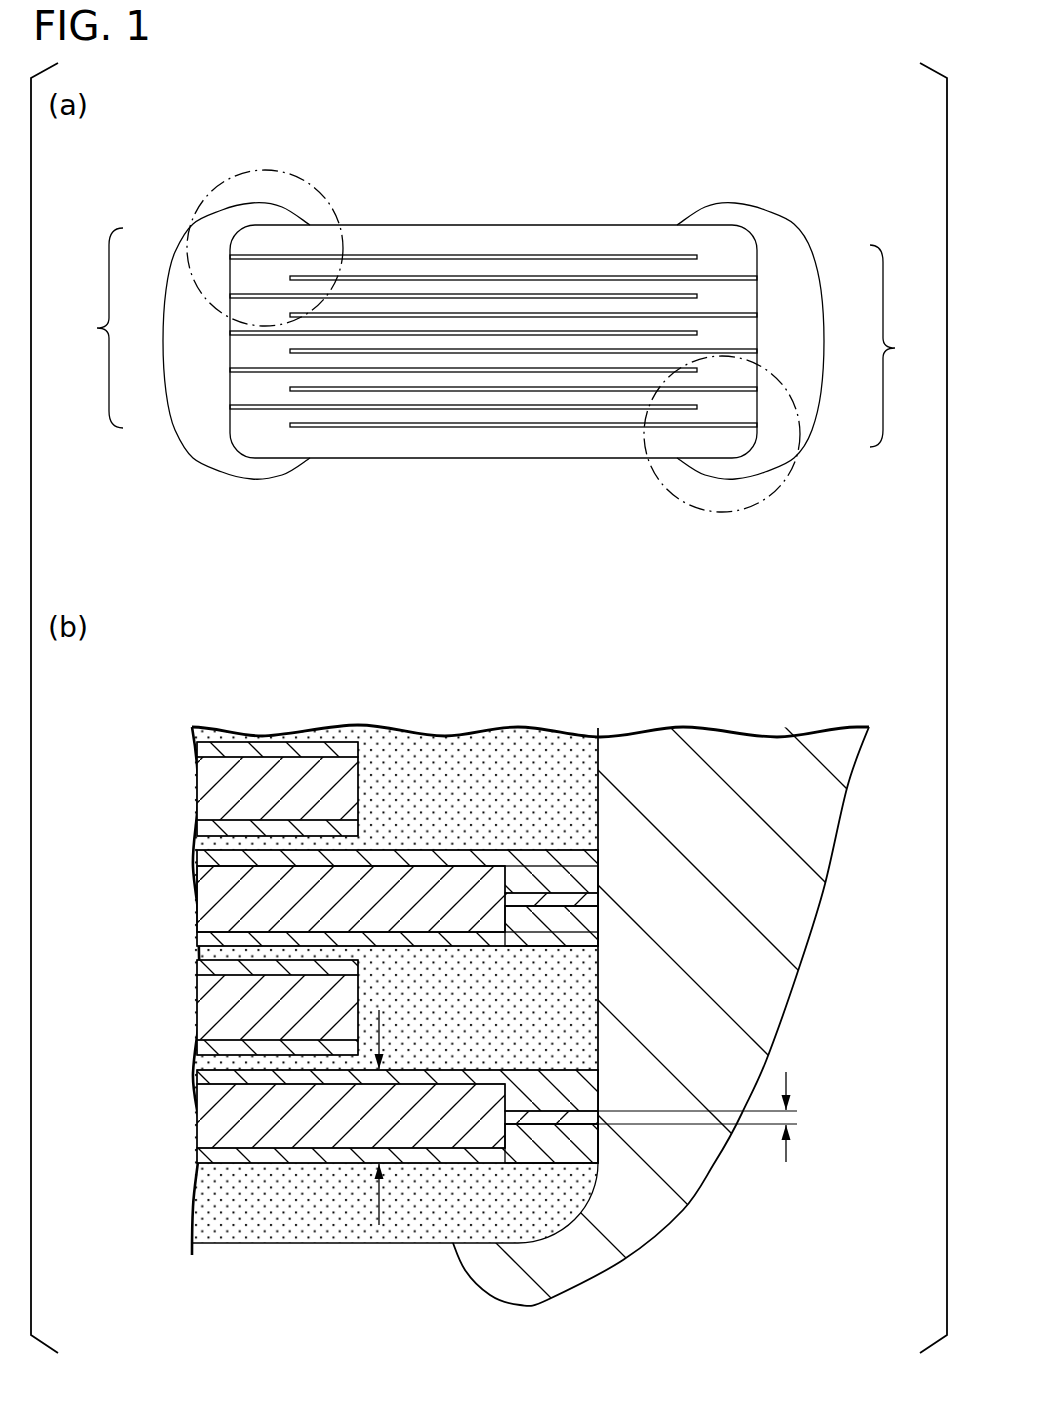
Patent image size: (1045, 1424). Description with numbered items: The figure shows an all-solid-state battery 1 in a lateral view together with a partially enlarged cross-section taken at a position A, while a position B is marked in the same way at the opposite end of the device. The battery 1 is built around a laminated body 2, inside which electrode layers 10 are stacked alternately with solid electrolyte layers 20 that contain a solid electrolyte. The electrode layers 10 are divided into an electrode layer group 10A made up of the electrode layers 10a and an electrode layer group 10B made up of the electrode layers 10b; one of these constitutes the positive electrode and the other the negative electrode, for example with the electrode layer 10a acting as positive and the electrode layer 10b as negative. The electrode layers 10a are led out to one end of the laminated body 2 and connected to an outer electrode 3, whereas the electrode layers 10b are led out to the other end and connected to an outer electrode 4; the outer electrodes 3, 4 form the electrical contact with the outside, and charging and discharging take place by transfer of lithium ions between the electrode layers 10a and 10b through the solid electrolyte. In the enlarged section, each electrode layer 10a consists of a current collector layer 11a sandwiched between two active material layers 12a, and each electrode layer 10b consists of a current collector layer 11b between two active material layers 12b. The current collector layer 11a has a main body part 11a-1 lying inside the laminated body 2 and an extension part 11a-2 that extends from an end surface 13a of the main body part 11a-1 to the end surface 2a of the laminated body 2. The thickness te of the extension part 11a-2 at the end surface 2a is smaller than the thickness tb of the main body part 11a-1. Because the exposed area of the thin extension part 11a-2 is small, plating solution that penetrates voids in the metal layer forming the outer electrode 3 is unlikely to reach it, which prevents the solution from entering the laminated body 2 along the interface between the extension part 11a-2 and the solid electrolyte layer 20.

The all-solid-state battery 1 is at (652, 172).
The laminated body 2 is at (552, 222).
The end surface of the laminated body 2a is at (599, 972).
The outer electrode 3 is at (770, 232).
The outer electrode 4 is at (215, 232).
The electrode layer 10 is at (500, 252).
The electrode layer 10a is at (738, 276).
The electrode layer 10b is at (248, 255).
The electrode layer group 10A is at (906, 346).
The electrode layer group 10B is at (85, 328).
The current collector layer 11a is at (565, 680).
The main body part 11a-1 is at (425, 888).
The extension part 11a-2 is at (540, 903).
The current collector layer 11b is at (225, 790).
The active material layer 12a is at (578, 870).
The active material layer 12b is at (222, 750).
The end surface of the main body part 13a is at (508, 913).
The solid electrolyte layer 20 is at (443, 258).
The position A is at (790, 490).
The enlarged region B is at (255, 172).
The thickness of the main body part tb is at (380, 1190).
The thickness of the extension part te is at (790, 1118).